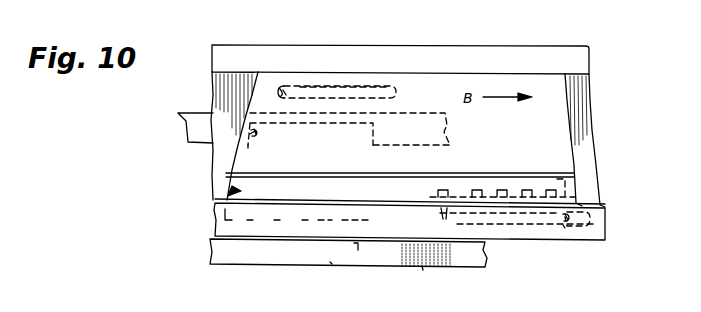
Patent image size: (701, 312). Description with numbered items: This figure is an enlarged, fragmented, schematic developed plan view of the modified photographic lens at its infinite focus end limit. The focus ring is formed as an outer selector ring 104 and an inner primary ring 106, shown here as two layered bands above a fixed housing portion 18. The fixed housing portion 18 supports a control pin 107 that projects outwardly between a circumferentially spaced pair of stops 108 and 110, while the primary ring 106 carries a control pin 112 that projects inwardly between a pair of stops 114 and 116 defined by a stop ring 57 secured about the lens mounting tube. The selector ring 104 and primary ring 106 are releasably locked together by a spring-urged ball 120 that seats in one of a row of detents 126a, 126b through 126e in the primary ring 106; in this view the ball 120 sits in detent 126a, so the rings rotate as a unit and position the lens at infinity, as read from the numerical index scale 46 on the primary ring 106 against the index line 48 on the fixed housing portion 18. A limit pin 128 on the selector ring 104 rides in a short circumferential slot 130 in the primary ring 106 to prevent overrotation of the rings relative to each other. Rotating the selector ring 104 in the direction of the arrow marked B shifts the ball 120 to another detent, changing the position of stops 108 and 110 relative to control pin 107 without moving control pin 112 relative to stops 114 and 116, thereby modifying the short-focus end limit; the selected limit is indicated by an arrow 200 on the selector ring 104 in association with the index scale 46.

The primary ring 106 is at (348, 51).
The selector ring 104 is at (553, 111).
The stop ring 57 is at (178, 116).
The limit pin 128 is at (278, 86).
The circumferential slot 130 is at (398, 83).
The stop 114 is at (372, 146).
The control pin 112 is at (262, 136).
The stop 116 is at (246, 146).
The arrow 200 is at (240, 191).
The detent 126a is at (443, 188).
The detent 126b is at (477, 190).
The detent 126e is at (557, 179).
The numerical index scale 46 is at (218, 223).
The stop 110 is at (592, 220).
The stop 108 is at (485, 258).
The fixed housing portion 18 is at (331, 262).
The index line 48 is at (358, 250).
The ball 120 is at (440, 206).
The control pin 107 is at (565, 228).